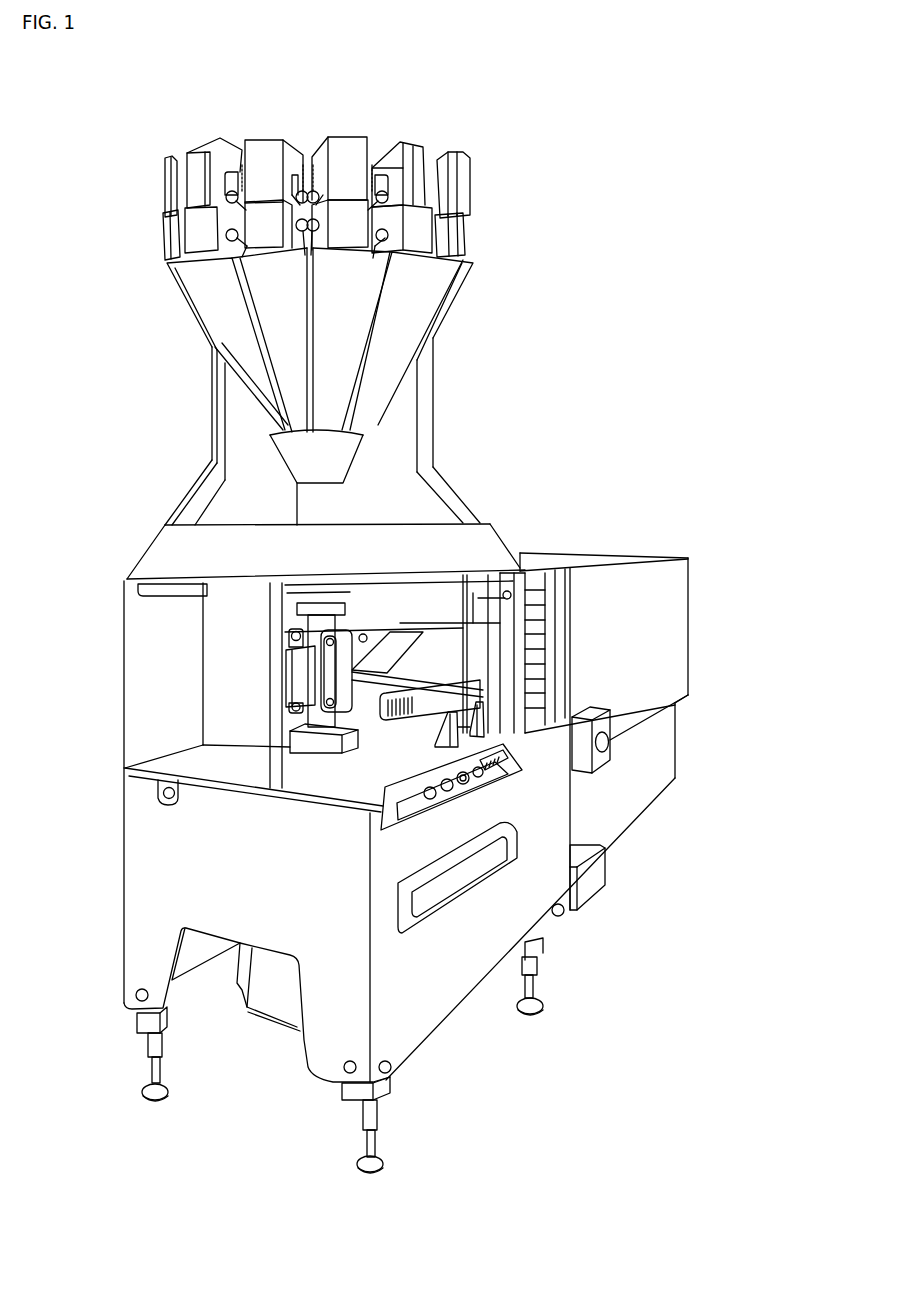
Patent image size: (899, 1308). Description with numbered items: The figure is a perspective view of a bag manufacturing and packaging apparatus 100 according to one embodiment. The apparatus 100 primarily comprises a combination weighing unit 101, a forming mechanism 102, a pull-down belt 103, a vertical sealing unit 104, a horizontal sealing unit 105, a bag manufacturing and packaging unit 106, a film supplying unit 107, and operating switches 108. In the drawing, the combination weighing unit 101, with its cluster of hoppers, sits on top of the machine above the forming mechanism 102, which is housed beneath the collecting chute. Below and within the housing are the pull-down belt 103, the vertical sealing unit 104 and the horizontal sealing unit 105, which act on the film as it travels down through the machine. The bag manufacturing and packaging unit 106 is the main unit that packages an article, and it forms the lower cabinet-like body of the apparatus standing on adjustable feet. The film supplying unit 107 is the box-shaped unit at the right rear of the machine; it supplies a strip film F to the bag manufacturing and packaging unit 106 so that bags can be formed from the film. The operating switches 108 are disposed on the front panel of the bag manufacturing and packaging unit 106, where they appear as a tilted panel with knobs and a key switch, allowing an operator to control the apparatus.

The bag manufacturing and packaging apparatus 100 is at (643, 148).
The combination weighing unit 101 is at (484, 137).
The forming mechanism 102 is at (348, 613).
The pull-down belt 103 is at (286, 645).
The vertical sealing unit 104 is at (290, 680).
The horizontal sealing unit 105 is at (313, 745).
The bag manufacturing and packaging unit 106 is at (569, 812).
The film supplying unit 107 is at (581, 541).
The operating switches 108 is at (419, 805).
The strip film F is at (427, 624).